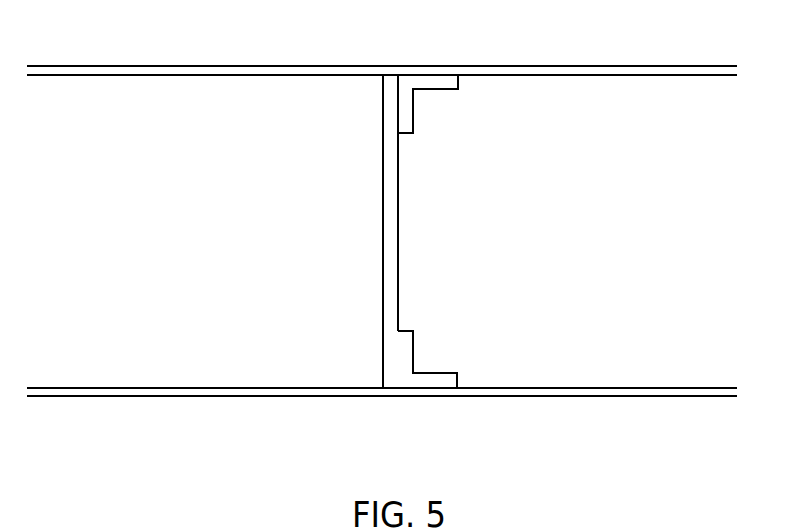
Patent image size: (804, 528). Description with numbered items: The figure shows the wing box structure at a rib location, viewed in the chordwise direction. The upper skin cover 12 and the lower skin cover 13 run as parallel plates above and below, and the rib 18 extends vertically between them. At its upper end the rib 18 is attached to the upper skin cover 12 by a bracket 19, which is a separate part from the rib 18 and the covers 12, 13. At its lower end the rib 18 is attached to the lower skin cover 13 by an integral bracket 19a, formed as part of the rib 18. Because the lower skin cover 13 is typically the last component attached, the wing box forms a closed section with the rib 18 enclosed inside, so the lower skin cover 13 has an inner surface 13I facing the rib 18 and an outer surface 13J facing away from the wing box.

The upper skin cover 12 is at (335, 66).
The lower skin cover 13 is at (325, 388).
The inner surface 13I is at (100, 387).
The outer surface 13J is at (138, 397).
The rib 18 is at (386, 225).
The bracket 19 is at (407, 122).
The integral bracket 19a is at (408, 343).